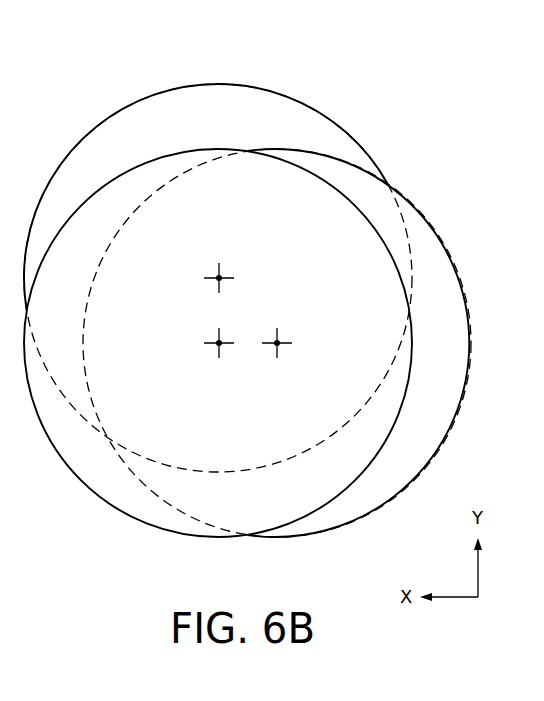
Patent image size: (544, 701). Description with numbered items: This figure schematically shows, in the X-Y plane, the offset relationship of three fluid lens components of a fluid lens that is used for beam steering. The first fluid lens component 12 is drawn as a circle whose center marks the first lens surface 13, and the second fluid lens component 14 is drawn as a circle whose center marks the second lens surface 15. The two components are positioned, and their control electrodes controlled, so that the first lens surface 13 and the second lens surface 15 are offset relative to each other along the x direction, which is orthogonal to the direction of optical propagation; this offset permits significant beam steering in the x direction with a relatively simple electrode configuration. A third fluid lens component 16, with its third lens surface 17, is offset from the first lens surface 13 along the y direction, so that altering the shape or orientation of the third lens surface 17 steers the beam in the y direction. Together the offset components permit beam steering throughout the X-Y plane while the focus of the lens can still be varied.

The first fluid lens component 12 is at (471, 337).
The first lens surface 13 is at (281, 341).
The second fluid lens component 14 is at (93, 491).
The second lens surface 15 is at (216, 348).
The third fluid lens component 16 is at (183, 86).
The third lens surface 17 is at (223, 277).